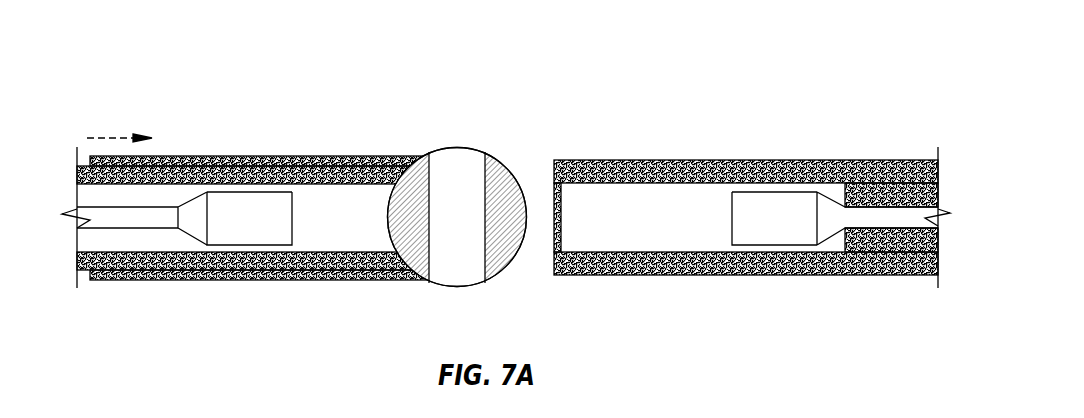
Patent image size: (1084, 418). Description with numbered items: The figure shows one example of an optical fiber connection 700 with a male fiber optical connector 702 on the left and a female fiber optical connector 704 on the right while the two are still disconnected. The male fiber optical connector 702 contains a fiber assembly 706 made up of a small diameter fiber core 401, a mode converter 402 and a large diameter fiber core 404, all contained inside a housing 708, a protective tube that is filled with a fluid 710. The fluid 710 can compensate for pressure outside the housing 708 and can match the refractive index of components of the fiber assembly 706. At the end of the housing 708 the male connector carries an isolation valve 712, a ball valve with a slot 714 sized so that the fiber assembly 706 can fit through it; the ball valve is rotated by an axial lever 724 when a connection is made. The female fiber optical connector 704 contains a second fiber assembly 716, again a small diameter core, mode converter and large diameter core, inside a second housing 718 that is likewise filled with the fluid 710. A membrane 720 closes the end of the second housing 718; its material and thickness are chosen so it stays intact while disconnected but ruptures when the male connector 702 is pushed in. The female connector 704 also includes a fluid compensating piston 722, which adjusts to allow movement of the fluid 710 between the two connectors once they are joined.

The optical fiber connection 700 is at (548, 58).
The male fiber optical connector 702 is at (285, 115).
The female fiber optical connector 704 is at (857, 115).
The fiber assembly 706 is at (267, 192).
The housing 708 is at (348, 170).
The fluid 710 is at (358, 234).
The isolation valve 712 is at (457, 148).
The slot 714 is at (460, 272).
The second fiber assembly 716 is at (770, 192).
The second housing 718 is at (598, 160).
The membrane 720 is at (554, 253).
The fluid compensating piston 722 is at (877, 195).
The axial lever 724 is at (220, 156).
The small diameter fiber core 401 is at (132, 223).
The mode converter 402 is at (187, 227).
The large diameter fiber core 404 is at (270, 227).